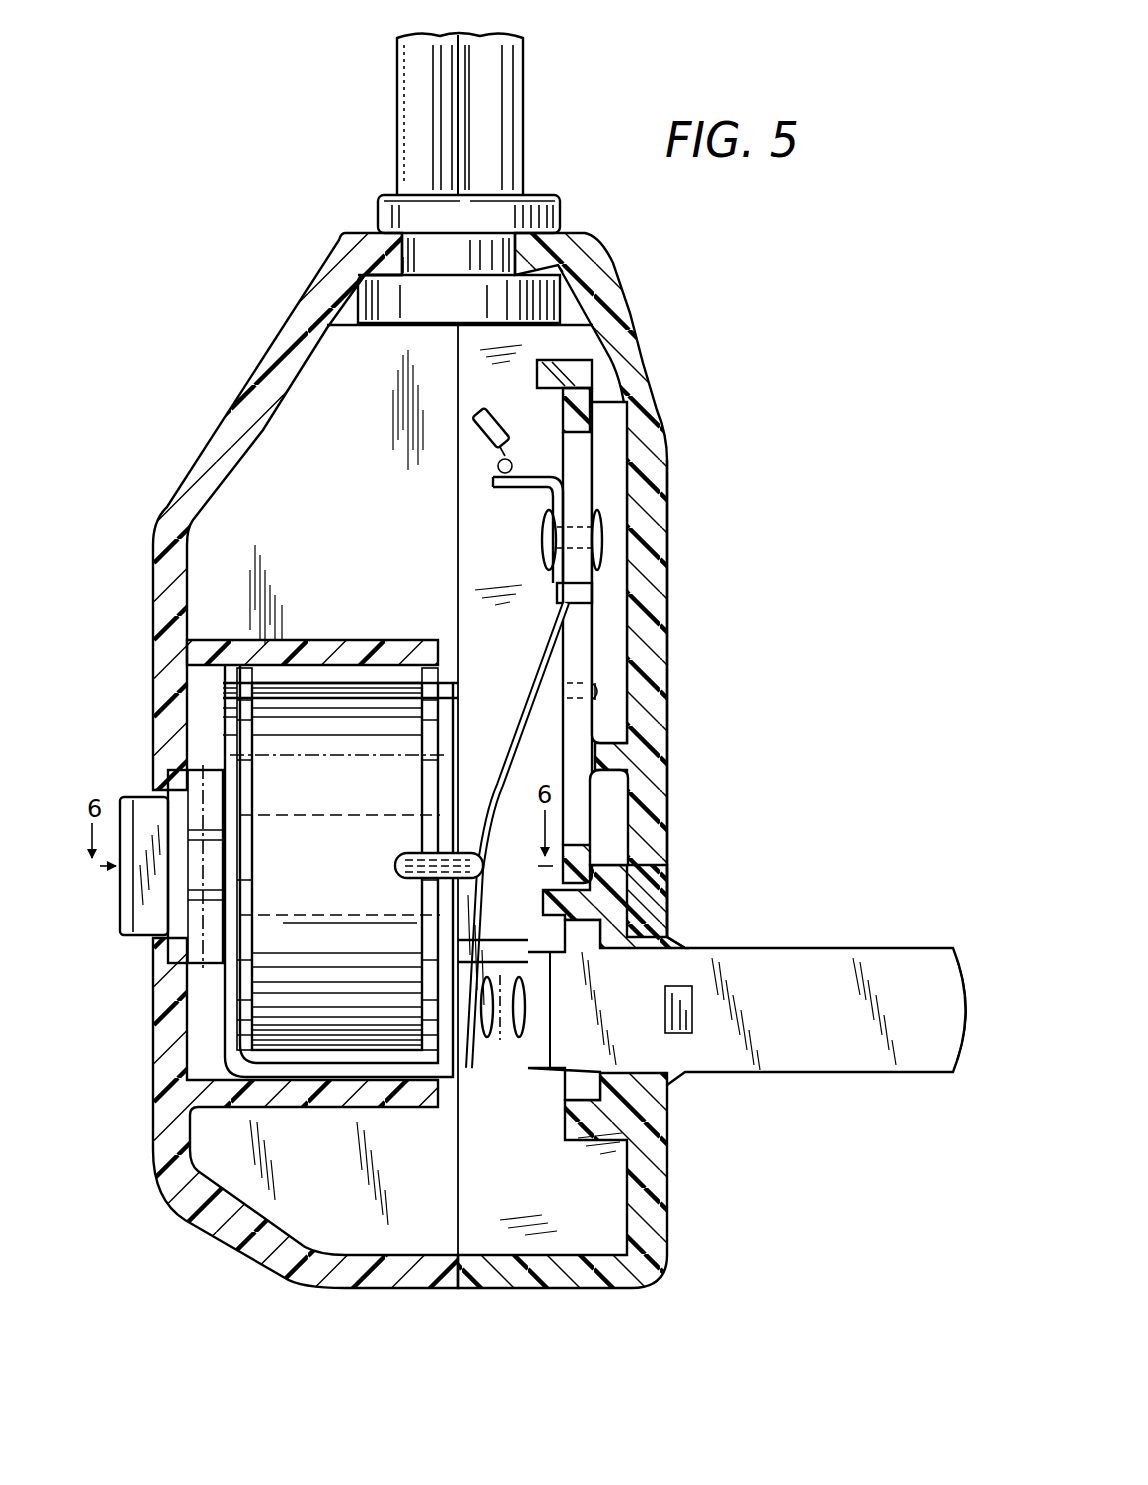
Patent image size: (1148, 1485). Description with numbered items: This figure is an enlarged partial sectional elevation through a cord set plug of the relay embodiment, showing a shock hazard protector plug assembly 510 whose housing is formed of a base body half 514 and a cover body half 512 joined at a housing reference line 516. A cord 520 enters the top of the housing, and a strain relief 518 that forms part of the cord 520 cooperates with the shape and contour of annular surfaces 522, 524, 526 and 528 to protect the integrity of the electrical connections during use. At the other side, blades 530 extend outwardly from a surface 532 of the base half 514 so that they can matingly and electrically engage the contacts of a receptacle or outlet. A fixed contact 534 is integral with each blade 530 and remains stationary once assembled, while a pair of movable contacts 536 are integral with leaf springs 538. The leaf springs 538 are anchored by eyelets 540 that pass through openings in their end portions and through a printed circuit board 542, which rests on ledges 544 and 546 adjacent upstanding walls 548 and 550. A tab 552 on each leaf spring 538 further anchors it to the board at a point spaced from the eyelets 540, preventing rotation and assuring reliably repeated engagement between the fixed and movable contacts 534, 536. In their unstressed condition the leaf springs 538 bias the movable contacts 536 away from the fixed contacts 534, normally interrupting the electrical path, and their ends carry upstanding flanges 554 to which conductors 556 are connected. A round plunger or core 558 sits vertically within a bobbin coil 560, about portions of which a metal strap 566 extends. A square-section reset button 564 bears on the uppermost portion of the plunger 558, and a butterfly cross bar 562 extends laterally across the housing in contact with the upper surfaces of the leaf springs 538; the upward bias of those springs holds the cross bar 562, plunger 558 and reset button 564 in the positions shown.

The plug assembly 510 is at (172, 493).
The cover body half 512 is at (237, 1237).
The base body half 514 is at (668, 1271).
The housing reference line 516 is at (458, 522).
The strain relief 518 is at (378, 196).
The cord 520 is at (405, 123).
The annular surface 522 is at (357, 303).
The annular surface 524 is at (357, 277).
The annular surface 526 is at (403, 257).
The annular surface 528 is at (382, 224).
The blades 530 is at (808, 957).
The surface 532 is at (667, 711).
The fixed contact 534 is at (515, 1043).
The movable contacts 536 is at (497, 1040).
The leaf springs 538 is at (547, 642).
The eyelets 540 is at (602, 512).
The printed circuit board 542 is at (580, 450).
The ledge 544 is at (583, 372).
The ledge 546 is at (590, 890).
The upstanding wall 548 is at (562, 368).
The upstanding wall 550 is at (574, 920).
The tab 552 is at (583, 588).
The upstanding flanges 554 is at (518, 487).
The conductors 556 is at (472, 422).
The plunger or core 558 is at (203, 837).
The bobbin coil 560 is at (347, 788).
The butterfly cross bar 562 is at (473, 853).
The reset button 564 is at (148, 922).
The metal strap 566 is at (330, 1073).